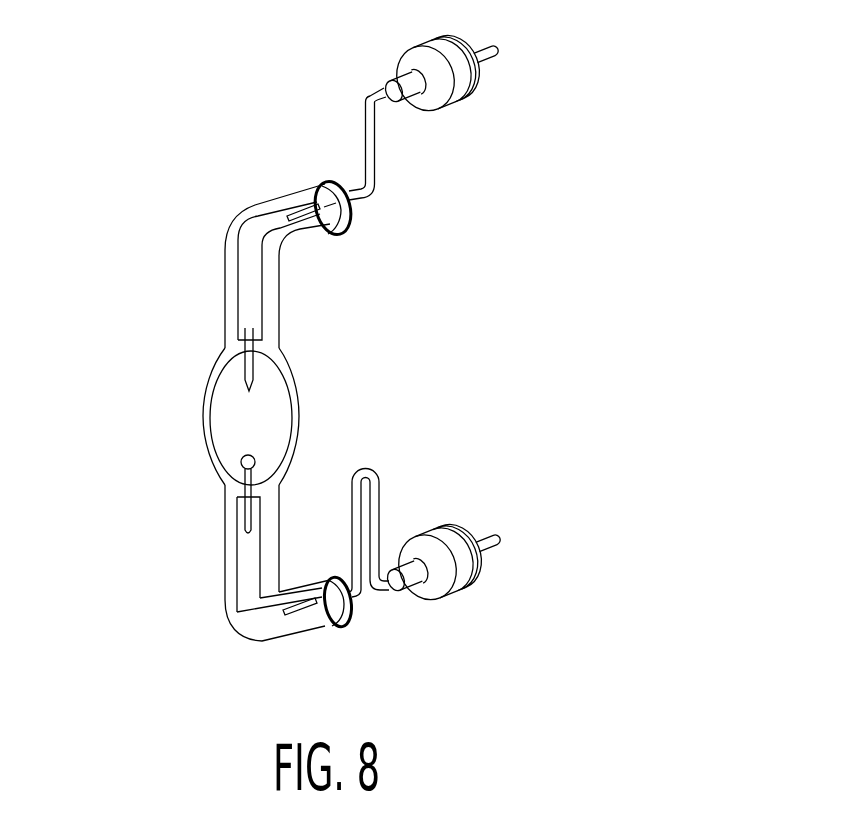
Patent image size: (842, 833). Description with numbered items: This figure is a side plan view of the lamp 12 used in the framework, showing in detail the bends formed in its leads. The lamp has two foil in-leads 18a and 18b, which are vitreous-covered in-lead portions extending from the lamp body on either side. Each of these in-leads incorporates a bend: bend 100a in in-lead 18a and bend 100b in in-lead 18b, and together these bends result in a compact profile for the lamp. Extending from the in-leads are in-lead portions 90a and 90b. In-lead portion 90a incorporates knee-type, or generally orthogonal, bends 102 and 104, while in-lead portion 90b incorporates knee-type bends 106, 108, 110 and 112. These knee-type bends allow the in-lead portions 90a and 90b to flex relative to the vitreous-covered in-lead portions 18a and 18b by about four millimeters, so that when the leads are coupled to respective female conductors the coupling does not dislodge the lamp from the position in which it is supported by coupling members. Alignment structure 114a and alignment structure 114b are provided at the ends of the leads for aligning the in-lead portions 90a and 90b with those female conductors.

The discharge lamp 12 is at (198, 412).
The foil in-lead 18a is at (250, 242).
The foil in-lead 18b is at (242, 570).
The in-lead portion 90a is at (355, 146).
The in-lead portion 90b is at (419, 571).
The bend 100a is at (268, 197).
The bend 100b is at (226, 636).
The knee-type bend 102 is at (375, 197).
The knee-type bend 104 is at (370, 95).
The knee-type bend 106 is at (351, 620).
The knee-type bend 108 is at (351, 477).
The knee-type bend 110 is at (380, 481).
The knee-type bend 112 is at (382, 598).
The alignment structure 114a is at (470, 108).
The alignment structure 114b is at (447, 520).